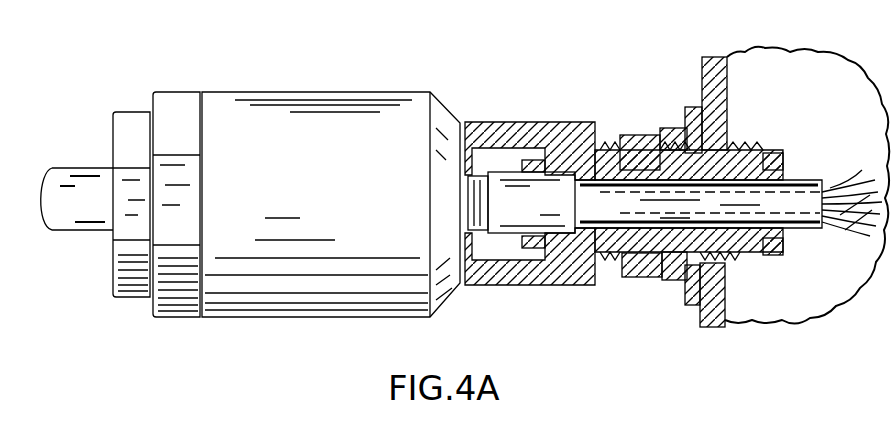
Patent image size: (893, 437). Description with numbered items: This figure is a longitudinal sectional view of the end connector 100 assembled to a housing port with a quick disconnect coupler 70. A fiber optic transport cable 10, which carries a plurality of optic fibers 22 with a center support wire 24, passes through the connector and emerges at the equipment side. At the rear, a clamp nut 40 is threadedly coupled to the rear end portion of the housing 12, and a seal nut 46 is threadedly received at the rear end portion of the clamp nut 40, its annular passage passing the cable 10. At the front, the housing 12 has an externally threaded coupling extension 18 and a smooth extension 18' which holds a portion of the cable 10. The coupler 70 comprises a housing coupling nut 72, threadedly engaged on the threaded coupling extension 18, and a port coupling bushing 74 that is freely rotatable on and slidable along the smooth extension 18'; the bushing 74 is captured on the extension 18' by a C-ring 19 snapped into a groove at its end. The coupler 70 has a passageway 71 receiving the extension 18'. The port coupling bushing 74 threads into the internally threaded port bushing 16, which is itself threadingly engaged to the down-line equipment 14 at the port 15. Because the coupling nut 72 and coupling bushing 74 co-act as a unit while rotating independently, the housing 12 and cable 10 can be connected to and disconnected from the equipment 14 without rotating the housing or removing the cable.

The fiber optic transport cable 10 is at (75, 152).
The seal nut 46 is at (131, 122).
The clamp nut 40 is at (172, 100).
The housing 12 is at (337, 105).
The end connector 100 is at (516, 94).
The threaded coupling extension 18 is at (689, 137).
The quick disconnect coupler 70 is at (652, 117).
The port bushing 16 is at (688, 105).
The down-line equipment 14 is at (730, 83).
The port 15 is at (734, 131).
The C-ring 19 is at (782, 148).
The optic fibers 22 is at (822, 180).
The center support wire 24 is at (868, 186).
The smooth extension 18' is at (710, 259).
The passageway 71 is at (726, 285).
The housing coupling nut 72 is at (633, 280).
The port coupling bushing 74 is at (670, 280).